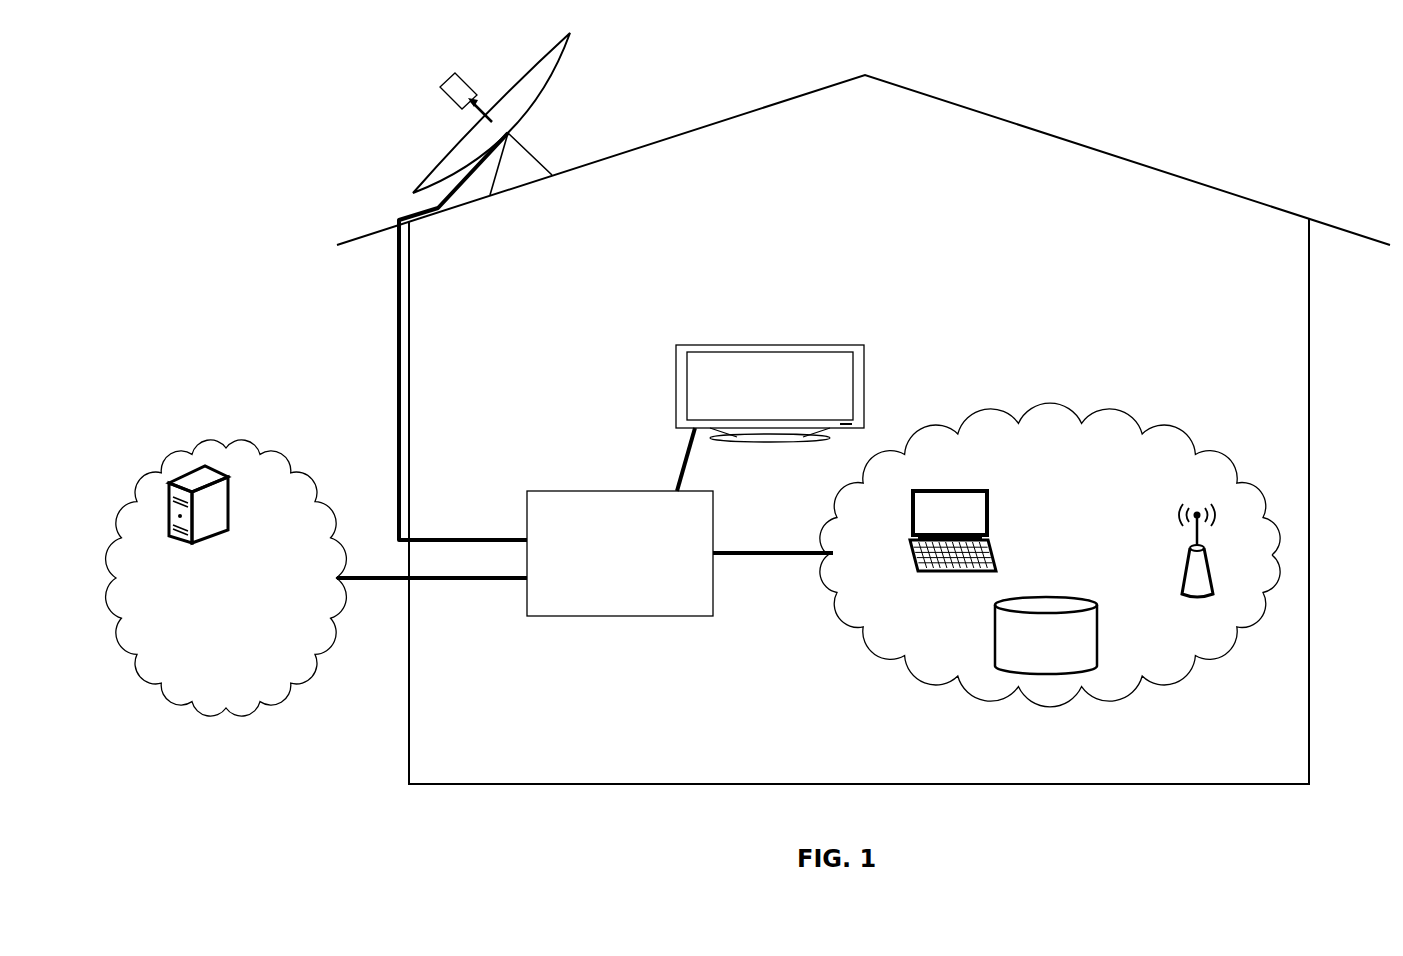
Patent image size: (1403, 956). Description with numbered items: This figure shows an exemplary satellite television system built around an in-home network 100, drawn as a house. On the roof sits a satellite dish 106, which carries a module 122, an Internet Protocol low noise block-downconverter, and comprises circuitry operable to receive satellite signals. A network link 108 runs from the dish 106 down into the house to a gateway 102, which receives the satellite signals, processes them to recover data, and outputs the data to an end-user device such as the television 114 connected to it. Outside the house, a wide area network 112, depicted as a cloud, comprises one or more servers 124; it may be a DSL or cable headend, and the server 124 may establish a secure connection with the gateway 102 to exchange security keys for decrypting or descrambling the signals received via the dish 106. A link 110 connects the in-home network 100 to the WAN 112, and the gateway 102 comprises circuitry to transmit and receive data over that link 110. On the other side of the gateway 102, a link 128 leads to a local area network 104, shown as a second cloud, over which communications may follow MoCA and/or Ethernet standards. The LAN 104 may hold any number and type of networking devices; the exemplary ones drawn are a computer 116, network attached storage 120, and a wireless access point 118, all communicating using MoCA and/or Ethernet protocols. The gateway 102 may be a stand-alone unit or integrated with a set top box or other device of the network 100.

The in-home network 100 is at (1130, 281).
The gateway 102 is at (620, 553).
The local area network (LAN) 104 is at (1050, 555).
The satellite dish 106 is at (545, 60).
The network link 108 is at (397, 335).
The link 110 is at (375, 577).
The wide area network (WAN) 112 is at (226, 578).
The television 114 is at (697, 345).
The computer 116 is at (935, 490).
The wireless access point (WAP) 118 is at (1212, 568).
The network attached storage 120 is at (1046, 635).
The module 122 is at (446, 80).
The server 124 is at (230, 502).
The link 128 is at (770, 552).